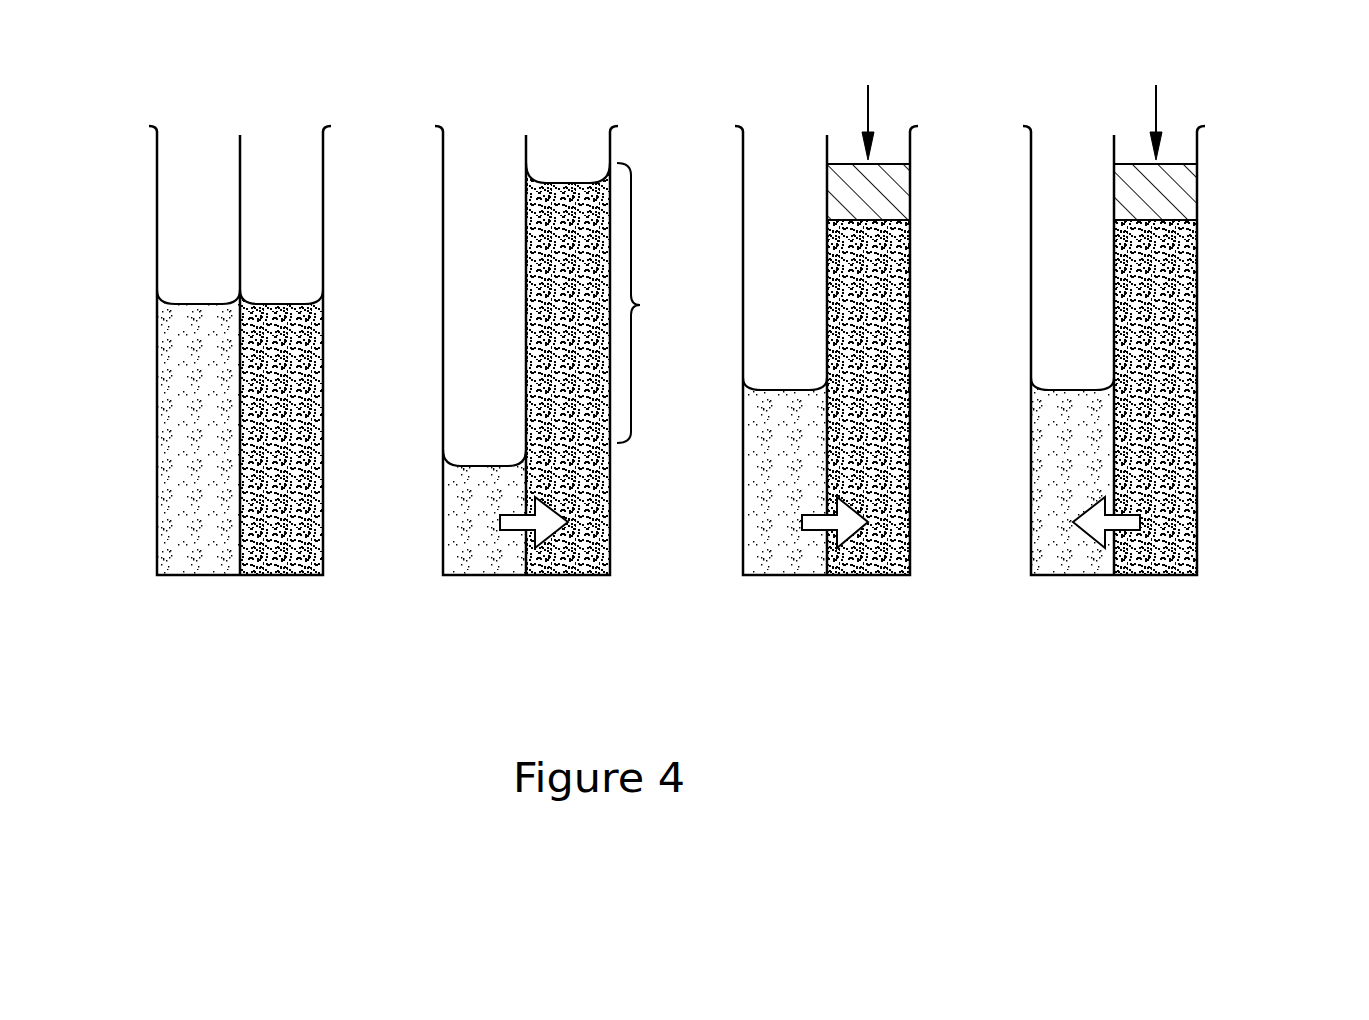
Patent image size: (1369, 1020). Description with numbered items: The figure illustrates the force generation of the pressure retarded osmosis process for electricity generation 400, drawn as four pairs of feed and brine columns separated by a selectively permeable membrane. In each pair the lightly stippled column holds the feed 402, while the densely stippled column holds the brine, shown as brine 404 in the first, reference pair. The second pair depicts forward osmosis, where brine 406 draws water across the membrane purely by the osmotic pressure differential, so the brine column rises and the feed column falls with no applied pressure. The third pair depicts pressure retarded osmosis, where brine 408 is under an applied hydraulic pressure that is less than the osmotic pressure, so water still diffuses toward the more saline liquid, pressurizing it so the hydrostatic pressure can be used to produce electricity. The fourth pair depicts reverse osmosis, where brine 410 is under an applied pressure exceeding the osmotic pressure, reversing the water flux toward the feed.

The pressure retarded osmosis process for electricity generation 400 is at (633, 657).
The feed solution 402 is at (203, 548).
The brine solution 404 is at (292, 550).
The brine in forward osmosis 406 is at (572, 552).
The brine in pressure retarded osmosis 408 is at (877, 552).
The brine in reverse osmosis 410 is at (1165, 552).